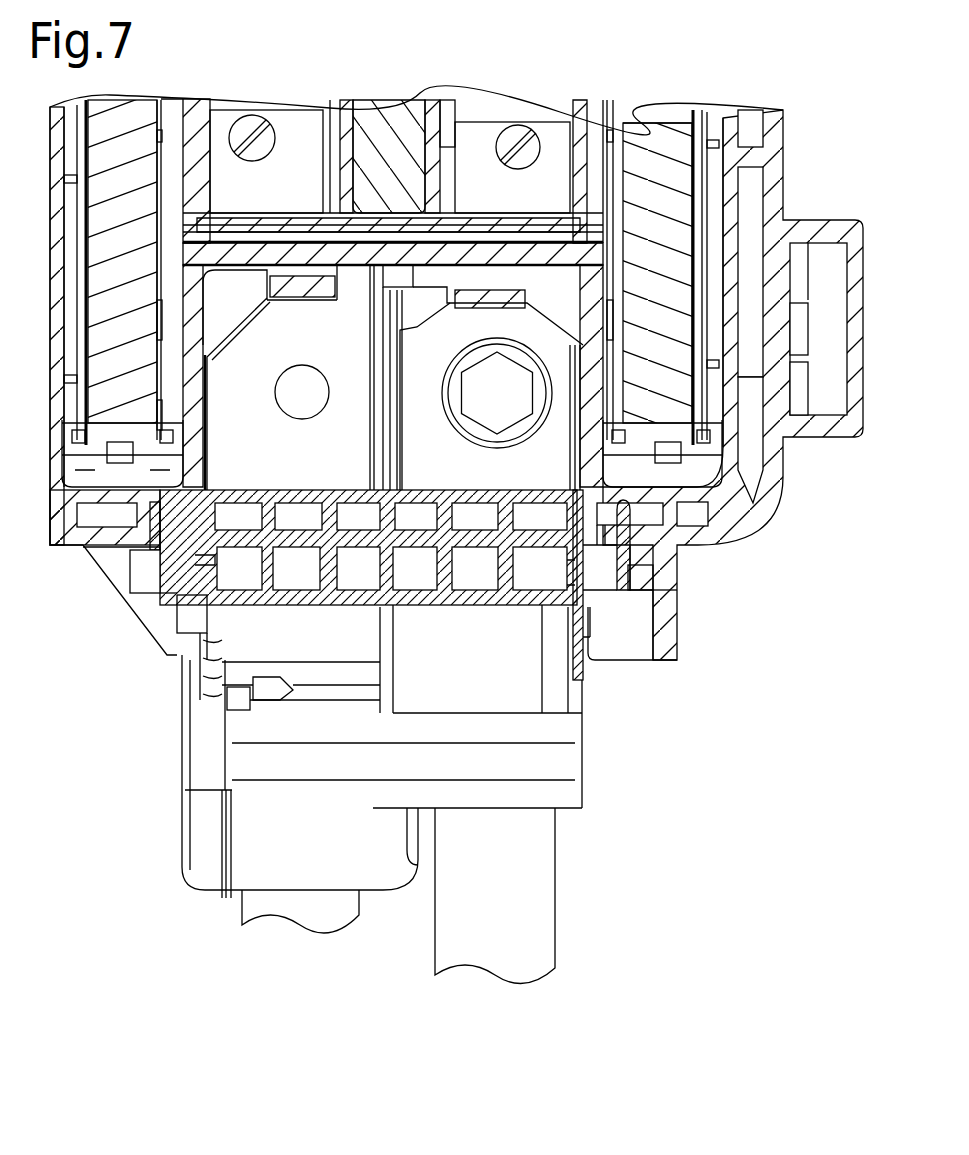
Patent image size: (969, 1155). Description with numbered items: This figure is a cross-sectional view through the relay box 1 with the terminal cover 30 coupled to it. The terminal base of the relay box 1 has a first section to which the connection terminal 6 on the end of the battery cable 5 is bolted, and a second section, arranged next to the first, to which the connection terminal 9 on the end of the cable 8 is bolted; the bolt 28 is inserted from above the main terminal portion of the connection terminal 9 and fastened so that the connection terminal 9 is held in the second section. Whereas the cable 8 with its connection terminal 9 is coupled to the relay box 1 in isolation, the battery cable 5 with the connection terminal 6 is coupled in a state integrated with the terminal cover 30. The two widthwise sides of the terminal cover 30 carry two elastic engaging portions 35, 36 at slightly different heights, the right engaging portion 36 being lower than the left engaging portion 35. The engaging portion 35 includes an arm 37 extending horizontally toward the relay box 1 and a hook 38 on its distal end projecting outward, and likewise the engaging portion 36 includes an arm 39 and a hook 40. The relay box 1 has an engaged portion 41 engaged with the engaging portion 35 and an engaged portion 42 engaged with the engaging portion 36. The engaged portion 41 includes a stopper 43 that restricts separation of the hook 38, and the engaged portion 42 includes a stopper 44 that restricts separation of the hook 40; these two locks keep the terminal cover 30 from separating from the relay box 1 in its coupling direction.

The relay box 1 is at (456, 373).
The connection terminal 6 is at (284, 288).
The connection terminal 9 is at (473, 303).
The bolt 28 is at (483, 405).
The terminal cover 30 is at (473, 605).
The engaging portion 35 is at (148, 604).
The engaging portion 36 is at (655, 603).
The arm 37 is at (157, 560).
The hook 38 is at (150, 510).
The arm 39 is at (628, 551).
The hook 40 is at (628, 514).
The engaged portion 41 is at (185, 502).
The engaged portion 42 is at (598, 497).
The stopper 43 is at (200, 561).
The stopper 44 is at (575, 570).
The battery cable 5 is at (242, 920).
The cable 8 is at (555, 907).